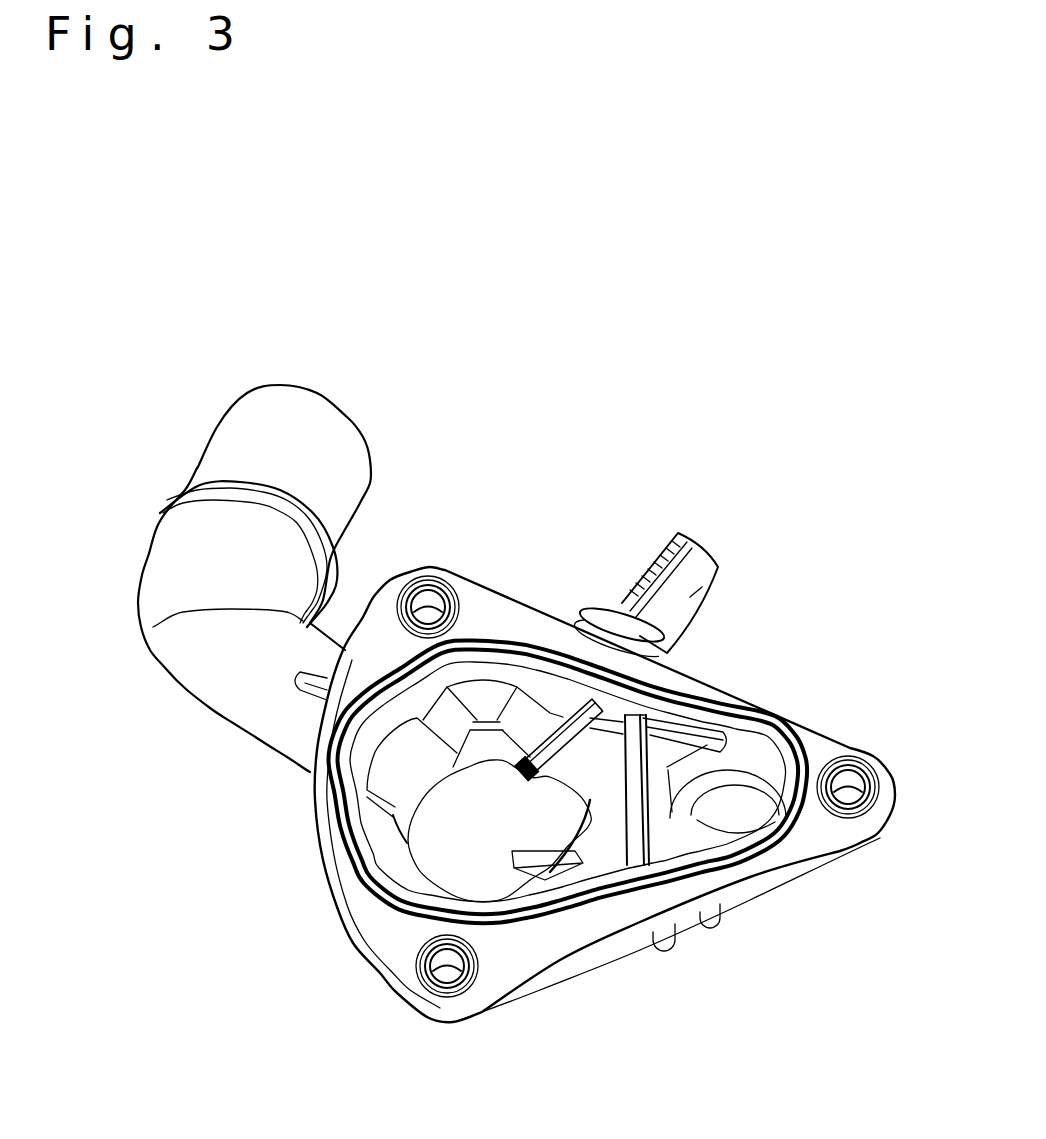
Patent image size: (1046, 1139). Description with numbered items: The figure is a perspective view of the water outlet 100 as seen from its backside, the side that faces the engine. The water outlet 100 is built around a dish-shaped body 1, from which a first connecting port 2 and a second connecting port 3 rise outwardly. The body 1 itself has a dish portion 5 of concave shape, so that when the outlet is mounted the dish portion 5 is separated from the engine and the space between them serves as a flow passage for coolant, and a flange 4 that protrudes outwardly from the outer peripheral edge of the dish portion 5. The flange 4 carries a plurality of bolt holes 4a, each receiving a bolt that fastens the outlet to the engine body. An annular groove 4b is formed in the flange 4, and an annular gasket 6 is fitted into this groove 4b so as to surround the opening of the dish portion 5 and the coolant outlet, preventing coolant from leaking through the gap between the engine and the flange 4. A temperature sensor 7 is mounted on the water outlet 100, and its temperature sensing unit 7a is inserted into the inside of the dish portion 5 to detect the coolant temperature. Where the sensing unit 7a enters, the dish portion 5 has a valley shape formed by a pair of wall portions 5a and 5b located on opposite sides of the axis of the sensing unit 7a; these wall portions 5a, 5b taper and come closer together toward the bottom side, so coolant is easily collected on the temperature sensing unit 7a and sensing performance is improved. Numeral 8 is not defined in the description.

The water outlet 100 is at (195, 311).
The body 1 is at (560, 943).
The first connecting port 2 is at (355, 437).
The second connecting port 3 is at (738, 827).
The flange 4 is at (357, 903).
The bolt holes 4a is at (433, 590).
The annular groove 4b is at (797, 833).
The dish portion 5 is at (603, 845).
The wall portion 5a is at (530, 720).
The wall portion 5b is at (707, 697).
The gasket 6 is at (790, 733).
The temperature sensor 7 is at (722, 570).
The temperature sensing unit 7a is at (653, 680).
The sensor seal 8 is at (610, 607).